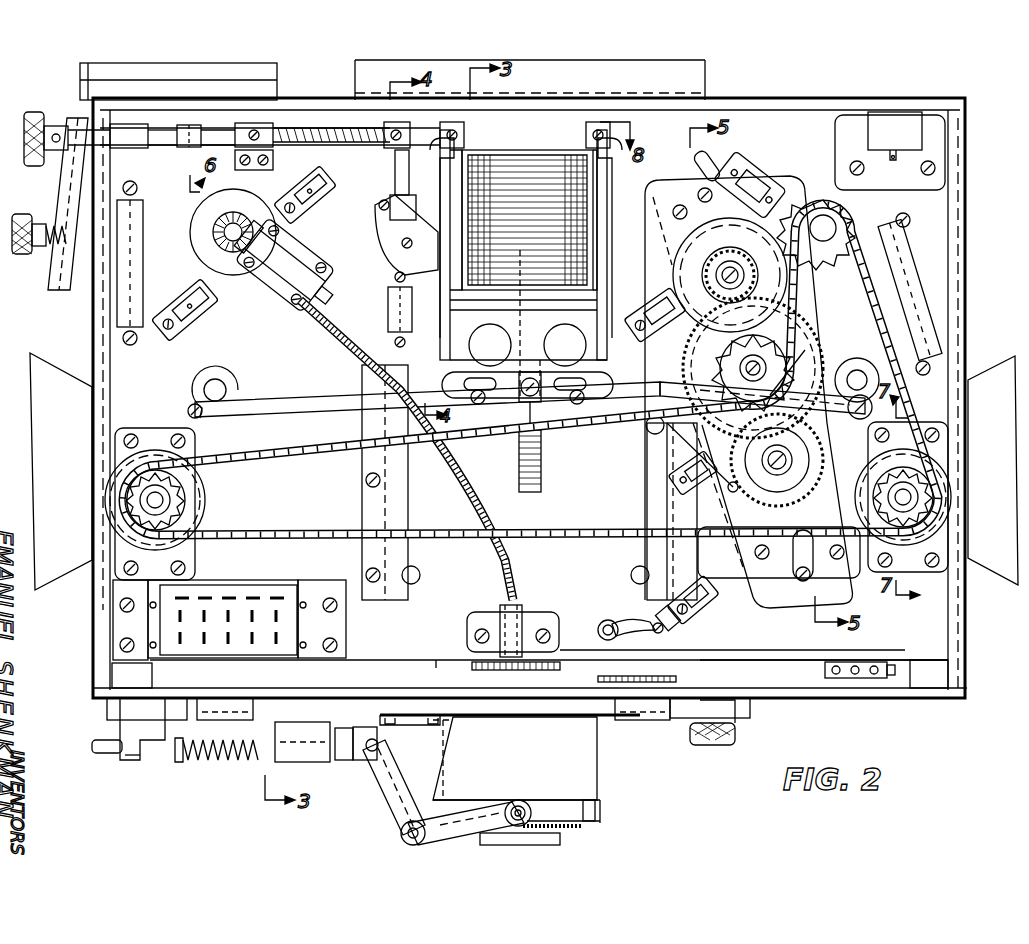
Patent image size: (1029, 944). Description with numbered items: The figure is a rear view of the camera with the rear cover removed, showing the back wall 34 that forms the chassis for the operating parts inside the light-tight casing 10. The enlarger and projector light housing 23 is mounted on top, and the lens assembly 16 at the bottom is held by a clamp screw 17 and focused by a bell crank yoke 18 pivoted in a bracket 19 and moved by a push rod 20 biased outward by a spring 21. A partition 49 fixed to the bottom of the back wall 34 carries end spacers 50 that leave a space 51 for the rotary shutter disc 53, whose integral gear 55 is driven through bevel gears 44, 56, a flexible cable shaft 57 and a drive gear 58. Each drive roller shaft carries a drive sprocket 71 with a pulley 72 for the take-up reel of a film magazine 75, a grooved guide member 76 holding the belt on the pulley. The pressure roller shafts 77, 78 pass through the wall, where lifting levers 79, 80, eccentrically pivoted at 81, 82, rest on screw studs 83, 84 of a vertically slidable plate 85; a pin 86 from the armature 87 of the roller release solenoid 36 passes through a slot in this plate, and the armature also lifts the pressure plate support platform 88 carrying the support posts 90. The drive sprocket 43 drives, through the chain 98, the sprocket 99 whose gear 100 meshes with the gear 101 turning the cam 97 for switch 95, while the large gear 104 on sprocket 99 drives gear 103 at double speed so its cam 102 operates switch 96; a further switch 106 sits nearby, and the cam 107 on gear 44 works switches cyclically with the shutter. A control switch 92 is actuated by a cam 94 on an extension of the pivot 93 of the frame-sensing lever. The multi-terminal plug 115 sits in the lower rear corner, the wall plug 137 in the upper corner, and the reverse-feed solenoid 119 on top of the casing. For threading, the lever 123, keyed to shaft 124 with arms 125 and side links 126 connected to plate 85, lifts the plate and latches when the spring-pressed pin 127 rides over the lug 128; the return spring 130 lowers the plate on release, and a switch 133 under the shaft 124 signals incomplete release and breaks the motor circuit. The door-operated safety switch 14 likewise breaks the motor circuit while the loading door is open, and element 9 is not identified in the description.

The knob 9 is at (34, 178).
The light-tight casing 10 is at (960, 262).
The safety switch 14 is at (866, 680).
The lens assembly 16 is at (613, 756).
The clamp screw 17 is at (736, 731).
The bell crank yoke 18 is at (462, 812).
The bracket 19 is at (385, 780).
The push rod 20 is at (100, 740).
The spring 21 is at (218, 756).
The enlarger and projector light housing 23 is at (706, 74).
The back wall 34 is at (940, 212).
The roller release solenoid 36 is at (538, 174).
The drive sprocket 43 is at (825, 244).
The bevel gear 44 is at (213, 226).
The partition 49 is at (883, 640).
The end spacers 50 is at (114, 672).
The space 51 is at (785, 664).
The rotary shutter disc 53 is at (666, 678).
The gear 55 is at (553, 646).
The bevel gear 56 is at (260, 222).
The flexible cable shaft 57 is at (458, 468).
The drive gear 58 is at (566, 666).
The drive sprocket 71 is at (190, 508).
The pulley 72 is at (120, 476).
The film magazine 75 is at (66, 374).
The U-shaped guide member 76 is at (200, 490).
The shaft 77 is at (225, 380).
The shaft 78 is at (856, 370).
The lifting lever 79 is at (305, 397).
The lifting lever 80 is at (838, 410).
The pivot 81 is at (184, 410).
The pivot 82 is at (864, 395).
The screw stud 83 is at (527, 394).
The screw stud 84 is at (539, 389).
The vertically slidable plate 85 is at (543, 420).
The pin 86 is at (536, 380).
The armature 87 is at (516, 306).
The pressure plate support platform 88 is at (444, 586).
The support posts 90 is at (418, 570).
The control switch 92 is at (708, 604).
The pivot 93 is at (600, 624).
The cam 94 is at (646, 622).
The switch 95 is at (660, 456).
The switch 96 is at (681, 391).
The cam 97 is at (760, 452).
The chain 98 is at (594, 526).
The sprocket 99 is at (770, 350).
The gear 100 is at (790, 344).
The gear 101 is at (821, 475).
The cam 102 is at (700, 274).
The gear 103 is at (760, 288).
The large gear 104 is at (805, 350).
The switch 106 is at (760, 160).
The cam 107 is at (244, 207).
The male multi-terminal plug 115 is at (216, 595).
The solenoid 119 is at (262, 72).
The lever 123 is at (72, 206).
The shaft 124 is at (164, 142).
The arms 125 is at (436, 124).
The side links 126 is at (418, 250).
The spring-pressed pin 127 is at (66, 280).
The lug 128 is at (83, 226).
The return spring 130 is at (338, 136).
The switch 133 is at (395, 198).
The wall plug 137 is at (868, 132).